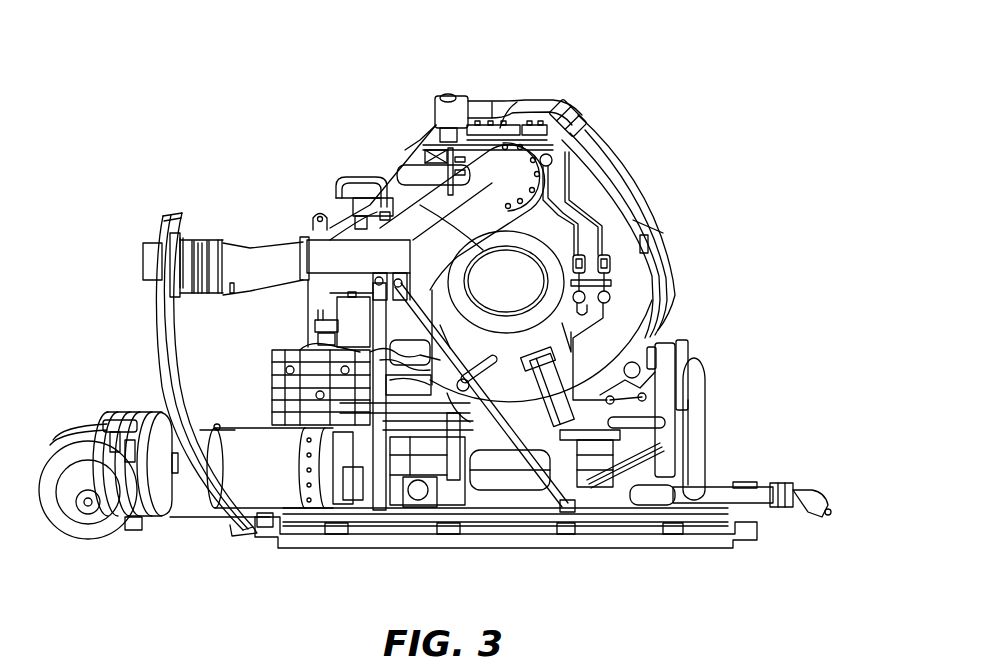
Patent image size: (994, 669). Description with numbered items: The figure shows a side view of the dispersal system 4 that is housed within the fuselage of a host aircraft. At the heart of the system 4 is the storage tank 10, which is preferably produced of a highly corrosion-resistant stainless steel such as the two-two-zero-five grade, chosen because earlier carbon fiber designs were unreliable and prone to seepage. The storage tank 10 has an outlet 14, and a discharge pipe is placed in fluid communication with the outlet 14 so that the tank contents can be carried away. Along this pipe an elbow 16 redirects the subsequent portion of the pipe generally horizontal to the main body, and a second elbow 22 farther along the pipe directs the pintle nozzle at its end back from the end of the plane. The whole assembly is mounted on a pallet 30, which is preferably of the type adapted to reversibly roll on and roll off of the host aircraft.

The system 4 is at (620, 103).
The storage tank 10 is at (563, 322).
The outlet 14 is at (57, 500).
The elbow 16 is at (93, 433).
The second elbow 22 is at (71, 297).
The pallet 30 is at (600, 548).